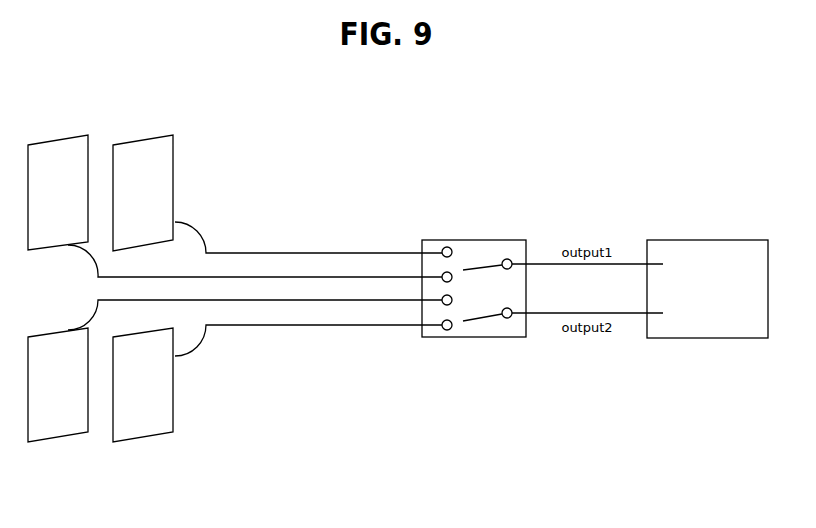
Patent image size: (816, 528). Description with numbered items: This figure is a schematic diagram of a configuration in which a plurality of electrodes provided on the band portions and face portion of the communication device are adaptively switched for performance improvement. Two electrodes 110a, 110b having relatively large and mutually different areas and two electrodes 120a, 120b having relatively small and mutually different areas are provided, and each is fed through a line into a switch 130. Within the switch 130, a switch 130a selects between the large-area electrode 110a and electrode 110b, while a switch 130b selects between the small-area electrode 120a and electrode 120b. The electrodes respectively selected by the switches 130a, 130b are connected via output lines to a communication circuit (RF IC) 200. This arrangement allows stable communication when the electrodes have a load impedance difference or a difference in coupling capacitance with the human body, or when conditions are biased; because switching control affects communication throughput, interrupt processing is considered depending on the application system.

The electrode 110a is at (56, 140).
The electrode 110b is at (141, 140).
The electrode 120a is at (60, 442).
The electrode 120b is at (145, 442).
The switch 130 is at (465, 283).
The switch 130a is at (487, 267).
The switch 130b is at (487, 317).
The communication circuit (RF IC) 200 is at (705, 237).